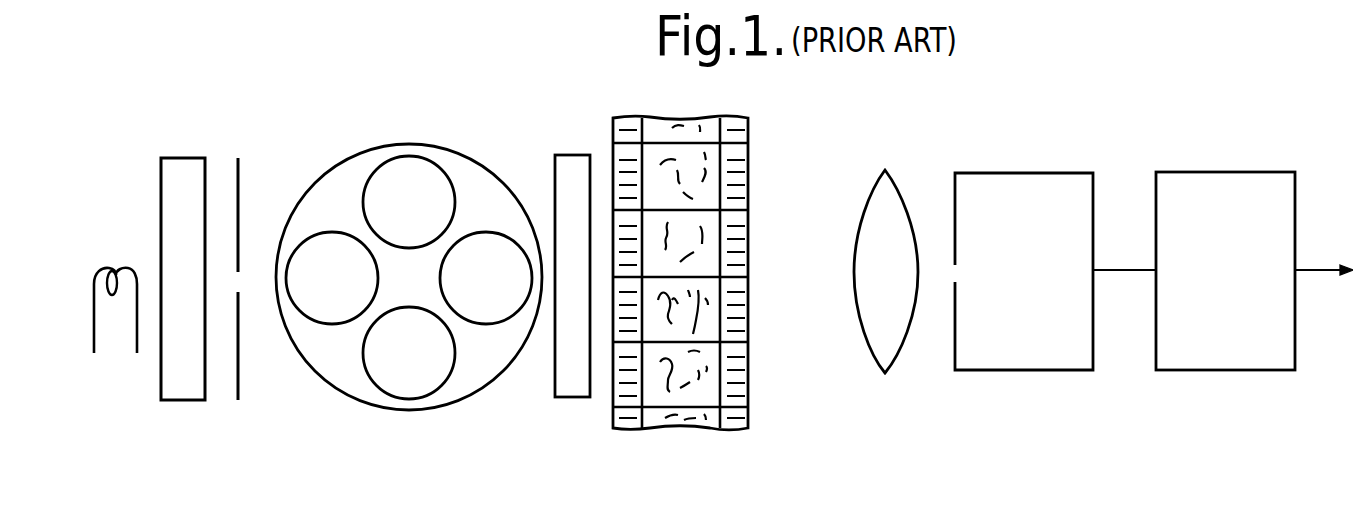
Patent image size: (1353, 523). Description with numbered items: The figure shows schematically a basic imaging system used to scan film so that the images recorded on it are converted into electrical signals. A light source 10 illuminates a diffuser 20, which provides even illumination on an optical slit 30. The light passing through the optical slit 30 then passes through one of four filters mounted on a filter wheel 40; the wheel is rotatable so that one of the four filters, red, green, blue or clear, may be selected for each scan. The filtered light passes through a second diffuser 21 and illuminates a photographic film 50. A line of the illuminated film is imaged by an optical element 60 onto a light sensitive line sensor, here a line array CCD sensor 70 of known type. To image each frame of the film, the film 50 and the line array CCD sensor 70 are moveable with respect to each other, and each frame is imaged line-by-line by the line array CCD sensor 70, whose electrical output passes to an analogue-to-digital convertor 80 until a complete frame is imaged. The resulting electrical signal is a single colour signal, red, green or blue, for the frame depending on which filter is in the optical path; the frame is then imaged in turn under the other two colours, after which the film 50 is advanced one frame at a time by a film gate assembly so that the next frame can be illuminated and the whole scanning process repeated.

The light source 10 is at (94, 337).
The diffuser 20 is at (193, 383).
The optical slit 30 is at (238, 388).
The filter wheel 40 is at (475, 370).
The second diffuser 21 is at (575, 382).
The photographic film 50 is at (705, 418).
The optical element 60 is at (897, 362).
The line array CCD sensor 70 is at (1067, 372).
The analogue-to-digital convertor 80 is at (1250, 372).